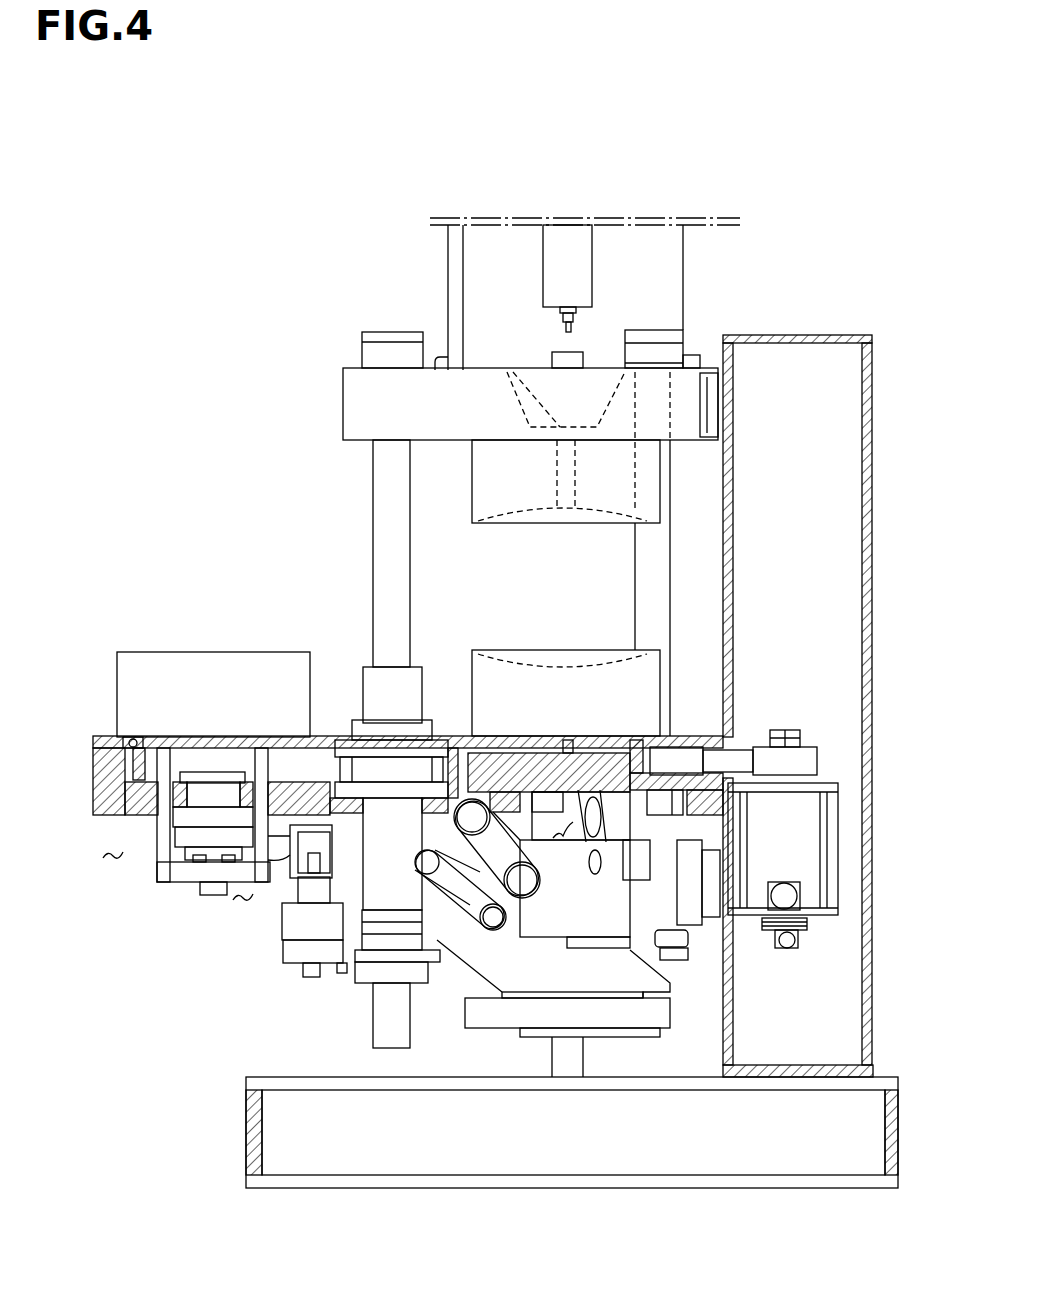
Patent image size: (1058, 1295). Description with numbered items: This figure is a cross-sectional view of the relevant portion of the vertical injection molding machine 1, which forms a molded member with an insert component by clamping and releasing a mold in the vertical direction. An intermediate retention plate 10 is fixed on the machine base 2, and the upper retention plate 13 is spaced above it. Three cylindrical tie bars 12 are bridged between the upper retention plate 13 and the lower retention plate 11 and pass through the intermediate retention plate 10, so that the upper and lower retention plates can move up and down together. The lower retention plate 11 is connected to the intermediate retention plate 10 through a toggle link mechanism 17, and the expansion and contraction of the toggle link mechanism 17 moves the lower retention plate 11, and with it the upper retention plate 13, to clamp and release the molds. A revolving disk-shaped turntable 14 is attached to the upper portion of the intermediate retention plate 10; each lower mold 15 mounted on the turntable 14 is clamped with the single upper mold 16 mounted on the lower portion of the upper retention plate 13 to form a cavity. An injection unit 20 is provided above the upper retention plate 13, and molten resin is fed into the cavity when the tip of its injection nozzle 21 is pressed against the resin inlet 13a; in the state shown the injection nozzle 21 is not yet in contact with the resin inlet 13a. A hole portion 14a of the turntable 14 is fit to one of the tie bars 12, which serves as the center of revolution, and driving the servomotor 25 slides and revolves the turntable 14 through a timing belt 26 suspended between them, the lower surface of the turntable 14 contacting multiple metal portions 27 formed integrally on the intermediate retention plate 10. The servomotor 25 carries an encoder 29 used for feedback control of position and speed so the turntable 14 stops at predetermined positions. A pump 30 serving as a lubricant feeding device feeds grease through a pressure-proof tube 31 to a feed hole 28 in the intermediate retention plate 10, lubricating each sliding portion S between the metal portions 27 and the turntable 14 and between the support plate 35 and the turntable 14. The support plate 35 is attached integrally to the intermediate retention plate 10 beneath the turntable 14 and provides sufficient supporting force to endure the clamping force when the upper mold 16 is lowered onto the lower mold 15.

The vertical injection molding machine 1 is at (784, 224).
The machine base 2 is at (846, 1132).
The intermediate retention plate 10 is at (90, 750).
The lower retention plate 11 is at (528, 970).
The tie bars 12 is at (398, 578).
The upper retention plate 13 is at (370, 395).
The resin inlet 13a is at (507, 372).
The turntable 14 is at (290, 736).
The hole portion 14a is at (337, 733).
The lower mold 15 is at (250, 660).
The upper mold 16 is at (493, 468).
The toggle link mechanism 17 is at (471, 903).
The injection unit 20 is at (704, 256).
The injection nozzle 21 is at (560, 318).
The servomotor 25 is at (790, 827).
The timing belt 26 is at (733, 758).
The metal portions 27 is at (130, 737).
The feed hole 28 is at (133, 737).
The encoder 29 is at (763, 948).
The pump 30 is at (302, 930).
The pressure-proof tube 31 is at (125, 850).
The support plate 35 is at (598, 812).
The sliding portion S is at (133, 737).